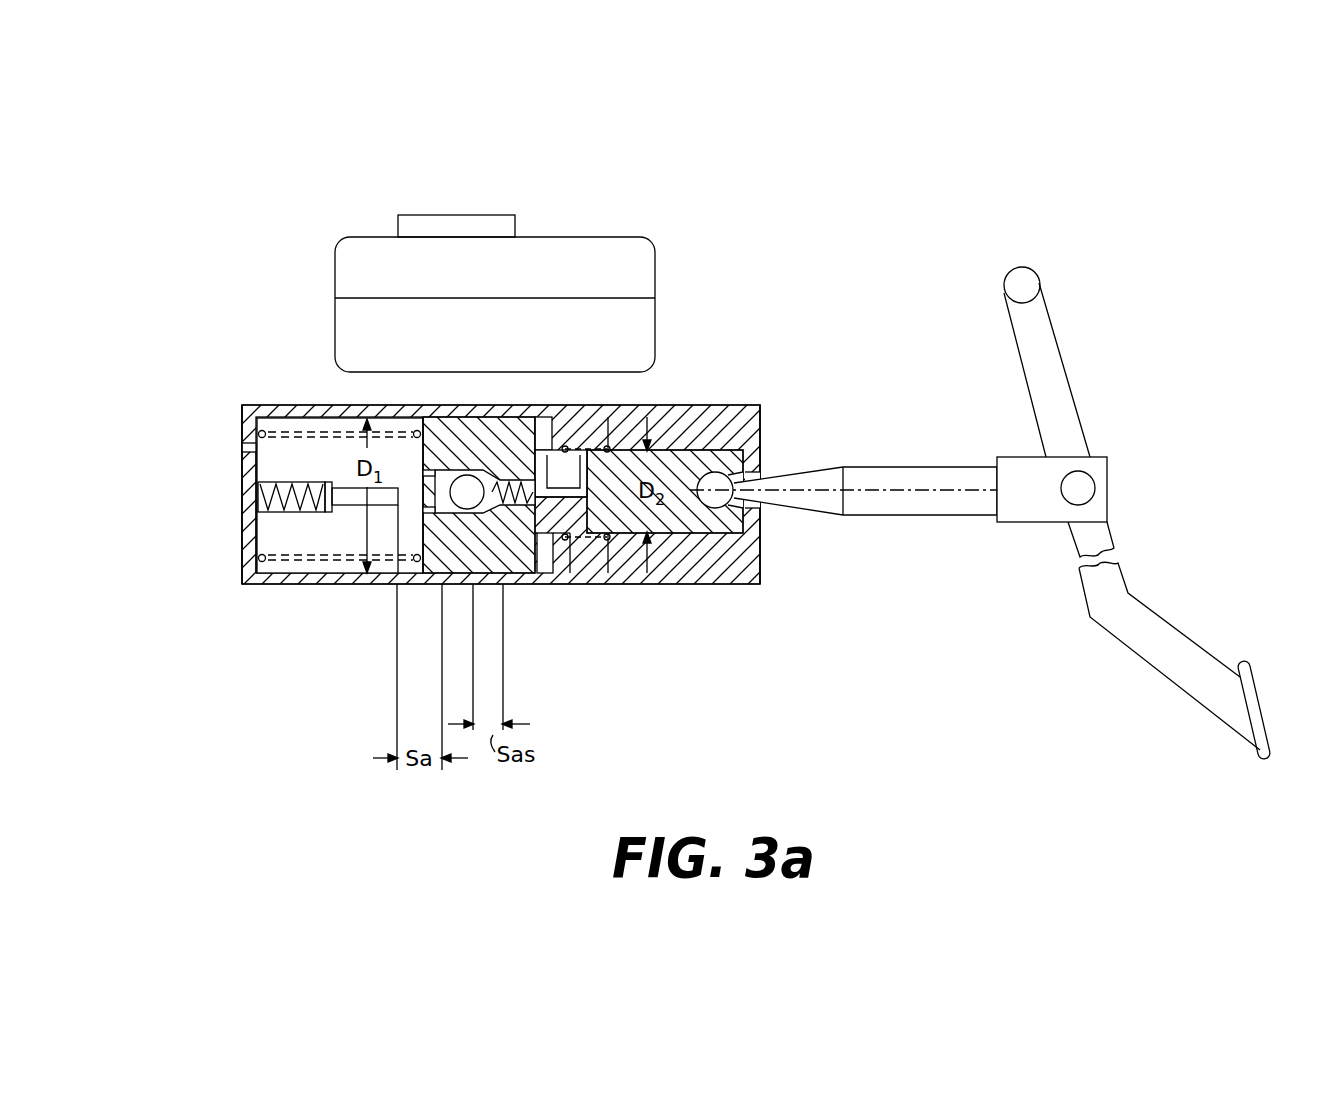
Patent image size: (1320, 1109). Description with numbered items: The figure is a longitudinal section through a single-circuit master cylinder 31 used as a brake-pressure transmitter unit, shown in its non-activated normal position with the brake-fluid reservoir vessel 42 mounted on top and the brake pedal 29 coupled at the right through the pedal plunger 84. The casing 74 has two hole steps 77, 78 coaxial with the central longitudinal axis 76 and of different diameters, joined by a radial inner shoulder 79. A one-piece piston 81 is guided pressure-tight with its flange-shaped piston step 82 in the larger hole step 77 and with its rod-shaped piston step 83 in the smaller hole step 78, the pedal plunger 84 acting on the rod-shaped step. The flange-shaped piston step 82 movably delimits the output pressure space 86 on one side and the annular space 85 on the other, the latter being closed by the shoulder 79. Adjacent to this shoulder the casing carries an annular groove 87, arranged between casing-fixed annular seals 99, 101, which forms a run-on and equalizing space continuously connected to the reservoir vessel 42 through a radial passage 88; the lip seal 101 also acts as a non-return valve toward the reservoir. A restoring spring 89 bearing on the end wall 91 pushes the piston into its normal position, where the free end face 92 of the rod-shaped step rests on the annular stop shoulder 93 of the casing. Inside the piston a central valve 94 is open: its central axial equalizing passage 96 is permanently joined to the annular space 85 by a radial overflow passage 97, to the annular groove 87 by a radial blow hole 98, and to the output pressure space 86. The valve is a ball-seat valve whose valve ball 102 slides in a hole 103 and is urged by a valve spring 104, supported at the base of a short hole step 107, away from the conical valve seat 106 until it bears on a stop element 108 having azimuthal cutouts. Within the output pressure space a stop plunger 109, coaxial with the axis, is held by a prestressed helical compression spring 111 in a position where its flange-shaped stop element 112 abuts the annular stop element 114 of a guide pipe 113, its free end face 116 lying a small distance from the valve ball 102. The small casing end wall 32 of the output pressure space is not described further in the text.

The brake pedal 29 is at (1183, 658).
The single-circuit master cylinder 31 is at (730, 403).
The end wall 32 is at (243, 450).
The brake-fluid reservoir vessel 42 is at (640, 275).
The casing 74 is at (670, 403).
The central longitudinal axis 76 is at (817, 490).
The hole step 77 is at (262, 425).
The hole step 78 is at (682, 535).
The radial inner shoulder 79 is at (543, 560).
The piston 81 is at (453, 566).
The flange-shaped piston step 82 is at (440, 548).
The rod-shaped piston step 83 is at (728, 537).
The pedal plunger 84 is at (917, 477).
The annular space 85 is at (555, 455).
The output pressure space 86 is at (254, 523).
The annular groove 87 is at (597, 540).
The radial passage 88 is at (582, 452).
The restoring spring 89 is at (317, 428).
The end wall 91 is at (242, 538).
The free end face 92 is at (760, 448).
The annular stop shoulder 93 is at (757, 527).
The central valve 94 is at (471, 458).
The central axial equalizing passage 96 is at (566, 542).
The radial overflow passage 97 is at (540, 450).
The radial blow hole 98 is at (615, 417).
The annular seal 99 is at (620, 543).
The annular lip seal 101 is at (555, 545).
The valve ball 102 is at (448, 420).
The hole 103 is at (418, 432).
The valve spring 104 is at (479, 477).
The conical valve seat 106 is at (520, 482).
The hole step 107 is at (523, 548).
The stop element 108 is at (405, 565).
The stop plunger 109 is at (352, 492).
The helical compression spring 111 is at (256, 480).
The flange-shaped stop element 112 is at (310, 540).
The guide pipe 113 is at (283, 525).
The annular stop element 114 is at (330, 540).
The free end face 116 is at (397, 425).